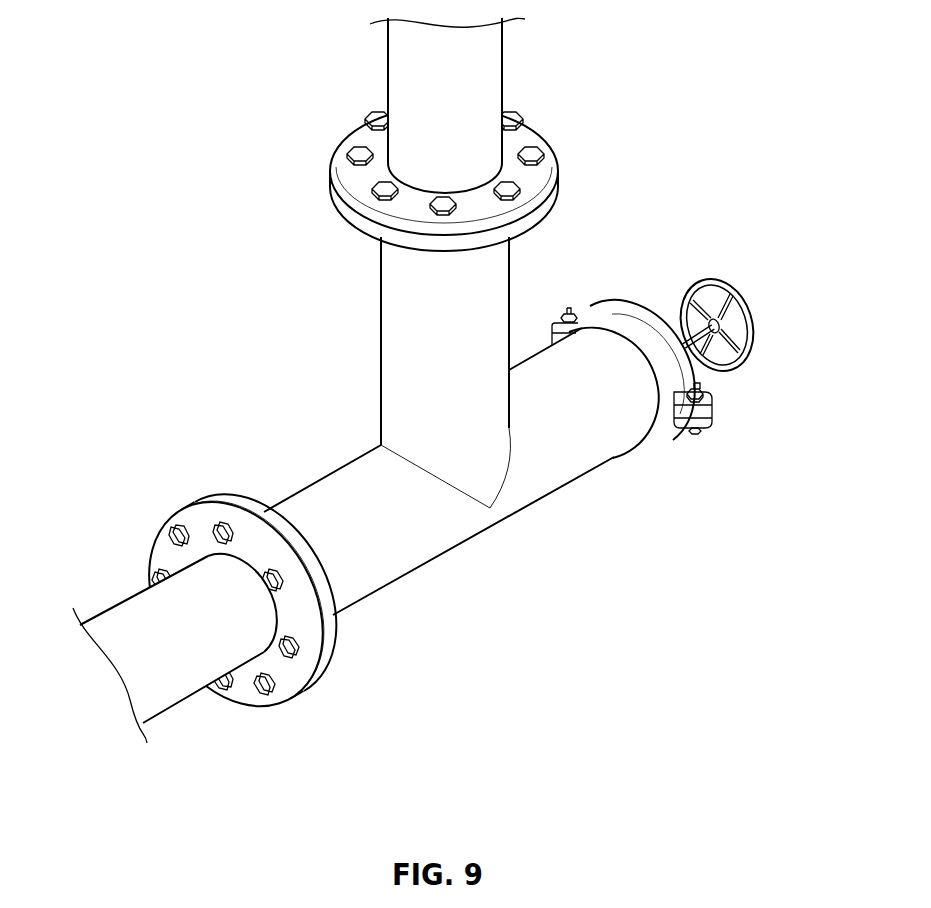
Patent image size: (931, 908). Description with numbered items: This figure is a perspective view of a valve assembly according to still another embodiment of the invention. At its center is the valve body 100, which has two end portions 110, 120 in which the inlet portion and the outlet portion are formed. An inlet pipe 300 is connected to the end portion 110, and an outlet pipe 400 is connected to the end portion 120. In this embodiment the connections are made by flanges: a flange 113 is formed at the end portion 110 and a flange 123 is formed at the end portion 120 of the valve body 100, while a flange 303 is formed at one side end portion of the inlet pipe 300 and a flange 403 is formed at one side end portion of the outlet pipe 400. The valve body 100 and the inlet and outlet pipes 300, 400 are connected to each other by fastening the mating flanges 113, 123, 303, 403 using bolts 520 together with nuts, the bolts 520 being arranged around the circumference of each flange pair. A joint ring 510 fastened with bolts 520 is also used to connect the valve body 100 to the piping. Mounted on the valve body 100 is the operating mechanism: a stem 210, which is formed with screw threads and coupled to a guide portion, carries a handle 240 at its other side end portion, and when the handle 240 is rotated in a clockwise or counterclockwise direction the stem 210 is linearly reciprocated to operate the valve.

The valve body 100 is at (545, 490).
The end portion 110 is at (333, 617).
The flange 113 is at (317, 667).
The end portion 120 is at (392, 287).
The flange 123 is at (558, 211).
The flange 403 is at (556, 193).
The outlet pipe 400 is at (492, 59).
The inlet pipe 300 is at (160, 697).
The flange 303 is at (307, 693).
The joint ring 510 is at (640, 310).
The bolts 520 is at (539, 154).
The stem 210 is at (735, 373).
The handle 240 is at (746, 301).